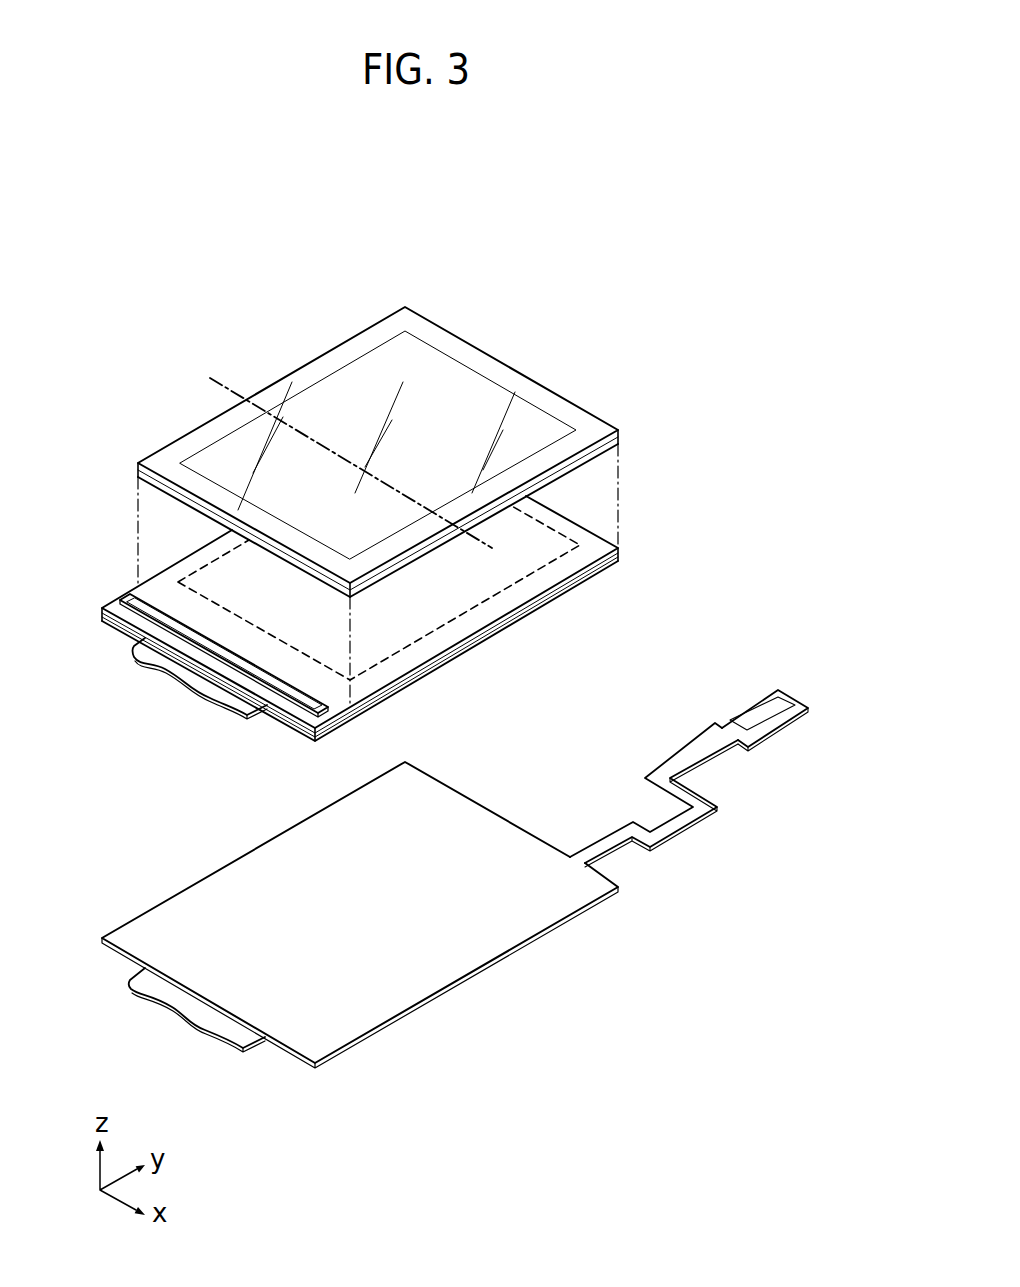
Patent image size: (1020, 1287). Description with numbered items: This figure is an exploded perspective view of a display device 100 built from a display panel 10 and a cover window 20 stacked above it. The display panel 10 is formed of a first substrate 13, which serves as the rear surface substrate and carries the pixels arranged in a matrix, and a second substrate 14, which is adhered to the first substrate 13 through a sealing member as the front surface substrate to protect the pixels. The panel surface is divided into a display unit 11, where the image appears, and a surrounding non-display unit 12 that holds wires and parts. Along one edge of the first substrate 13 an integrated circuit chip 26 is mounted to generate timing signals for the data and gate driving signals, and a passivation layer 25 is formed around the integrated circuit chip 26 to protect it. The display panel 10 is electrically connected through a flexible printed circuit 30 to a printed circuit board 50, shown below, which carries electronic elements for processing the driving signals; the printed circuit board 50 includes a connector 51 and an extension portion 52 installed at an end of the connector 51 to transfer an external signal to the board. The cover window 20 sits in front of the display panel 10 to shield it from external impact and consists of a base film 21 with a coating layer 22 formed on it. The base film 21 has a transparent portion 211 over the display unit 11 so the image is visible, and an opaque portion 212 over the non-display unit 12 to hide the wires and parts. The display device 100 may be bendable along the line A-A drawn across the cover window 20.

The display device 100 is at (395, 208).
The display panel 10 is at (542, 623).
The display unit 11 is at (455, 600).
The non-display unit 12 is at (557, 578).
The first substrate 13 is at (604, 563).
The second substrate 14 is at (597, 546).
The cover window 20 is at (585, 400).
The base film 21 is at (158, 490).
The coating layer 22 is at (184, 495).
The transparent portion 211 is at (425, 357).
The opaque portion 212 is at (490, 372).
The passivation layer 25 is at (118, 597).
The integrated circuit chip 26 is at (128, 584).
The flexible printed circuit 30 is at (183, 667).
The printed circuit board 50 is at (500, 935).
The connector 51 is at (768, 712).
The extension portion 52 is at (703, 800).